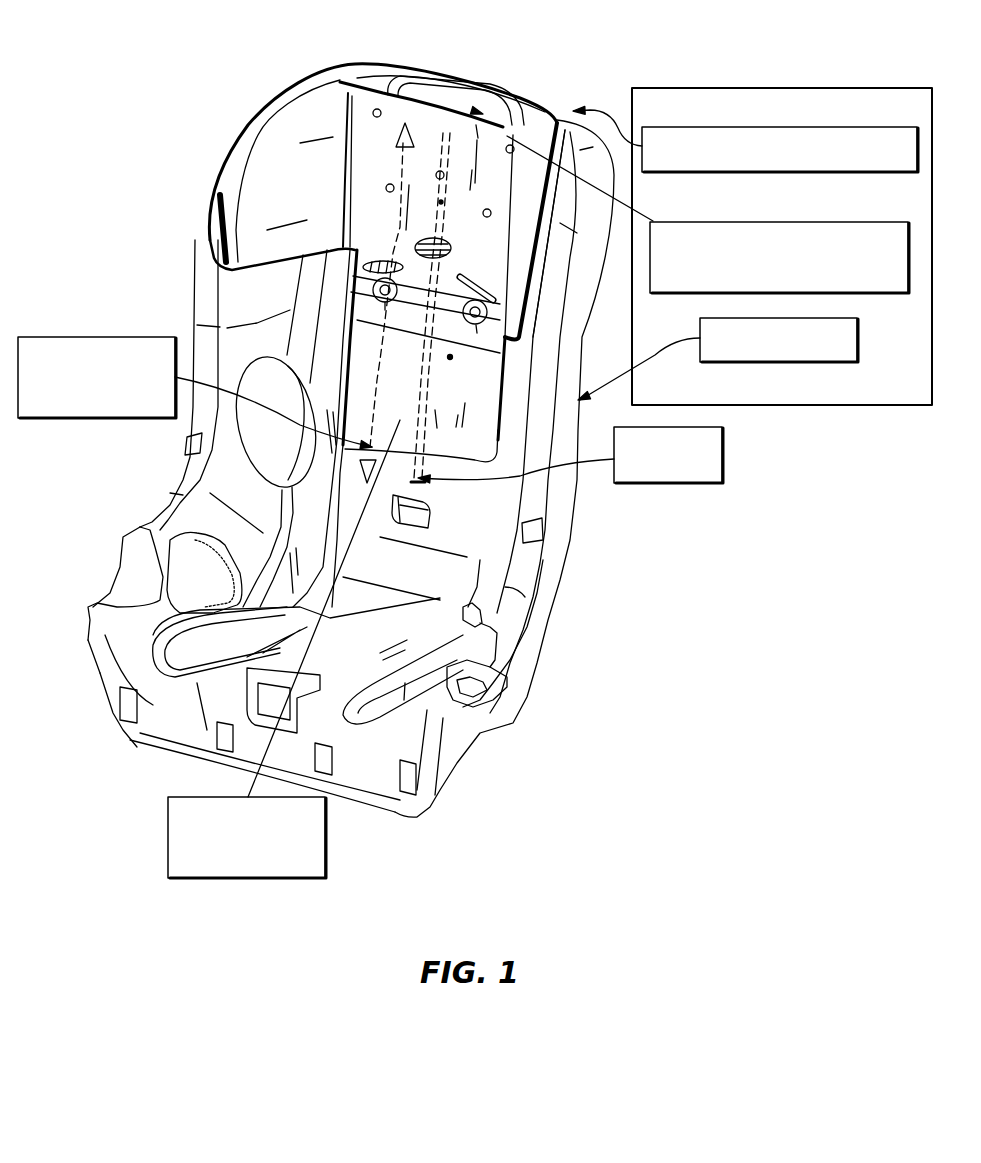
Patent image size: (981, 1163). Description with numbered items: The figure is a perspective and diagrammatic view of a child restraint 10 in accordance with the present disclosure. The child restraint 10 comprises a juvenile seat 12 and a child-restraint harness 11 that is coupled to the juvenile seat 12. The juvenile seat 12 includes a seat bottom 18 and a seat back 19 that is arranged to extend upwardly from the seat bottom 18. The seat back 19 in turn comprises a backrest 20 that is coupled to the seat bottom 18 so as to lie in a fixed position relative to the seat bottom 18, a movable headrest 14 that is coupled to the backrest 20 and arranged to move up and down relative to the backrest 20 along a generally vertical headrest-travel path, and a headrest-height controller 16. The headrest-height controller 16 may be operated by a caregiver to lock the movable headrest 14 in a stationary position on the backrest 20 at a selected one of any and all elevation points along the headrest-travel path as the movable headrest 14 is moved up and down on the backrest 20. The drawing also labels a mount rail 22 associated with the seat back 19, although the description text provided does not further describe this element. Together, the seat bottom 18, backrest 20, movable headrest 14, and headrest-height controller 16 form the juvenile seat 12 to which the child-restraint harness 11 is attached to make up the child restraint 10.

The child restraint 10 is at (175, 107).
The child-restraint harness 11 is at (168, 830).
The juvenile seat 12 is at (173, 327).
The movable headrest 14 is at (333, 70).
The headrest-height controller 16 is at (777, 220).
The seat bottom 18 is at (178, 765).
The seat back 19 is at (747, 88).
The backrest 20 is at (820, 363).
The mount rail 22 is at (723, 457).